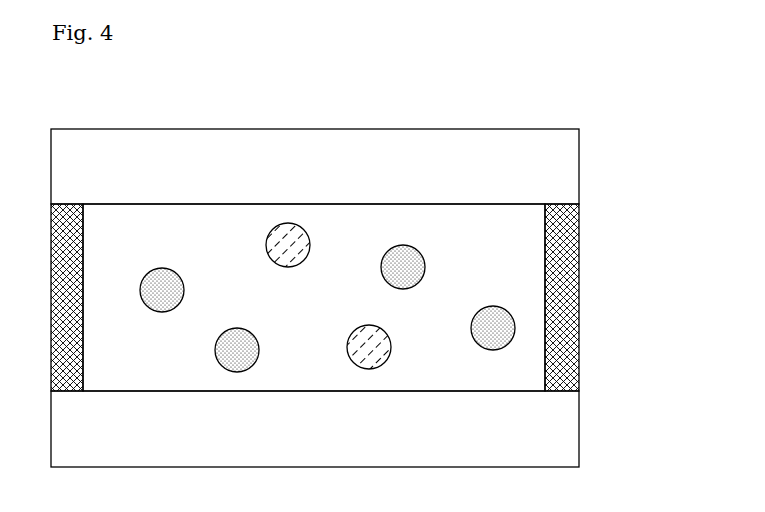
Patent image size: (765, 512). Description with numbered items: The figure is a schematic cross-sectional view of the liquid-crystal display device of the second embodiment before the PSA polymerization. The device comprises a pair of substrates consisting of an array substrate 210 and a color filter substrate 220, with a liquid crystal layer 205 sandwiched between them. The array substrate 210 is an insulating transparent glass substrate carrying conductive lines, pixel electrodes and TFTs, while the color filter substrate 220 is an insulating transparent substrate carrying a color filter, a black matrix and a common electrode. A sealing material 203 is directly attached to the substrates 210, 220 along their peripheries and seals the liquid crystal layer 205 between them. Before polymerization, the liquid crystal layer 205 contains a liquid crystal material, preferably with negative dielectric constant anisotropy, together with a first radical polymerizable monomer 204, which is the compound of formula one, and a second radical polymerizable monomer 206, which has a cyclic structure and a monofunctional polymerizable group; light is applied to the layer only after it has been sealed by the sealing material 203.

The color filter substrate 220 is at (565, 160).
The array substrate 210 is at (565, 440).
The sealing material 203 is at (565, 284).
The liquid crystal layer 205 is at (143, 233).
The first radical polymerizable monomer 204 is at (403, 252).
The second radical polymerizable monomer 206 is at (289, 236).